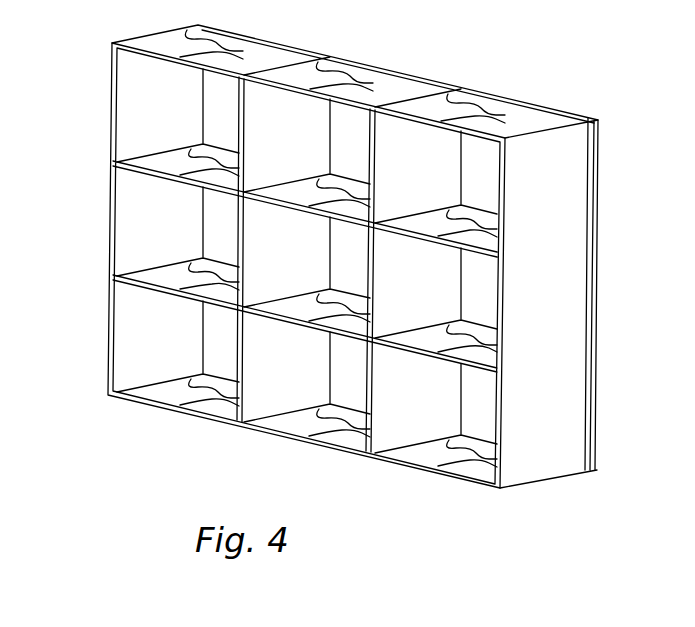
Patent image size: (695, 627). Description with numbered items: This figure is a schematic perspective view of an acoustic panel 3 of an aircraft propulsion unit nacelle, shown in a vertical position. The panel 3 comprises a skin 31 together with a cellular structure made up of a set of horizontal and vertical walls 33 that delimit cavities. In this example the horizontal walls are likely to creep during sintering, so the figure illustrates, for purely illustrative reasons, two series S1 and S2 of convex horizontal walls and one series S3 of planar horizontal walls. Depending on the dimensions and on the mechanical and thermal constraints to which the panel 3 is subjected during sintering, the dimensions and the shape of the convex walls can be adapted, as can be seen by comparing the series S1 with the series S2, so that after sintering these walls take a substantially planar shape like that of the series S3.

The panel 3 is at (342, 271).
The skin 31 is at (602, 133).
The horizontal and vertical walls 33 is at (152, 47).
The series of convex horizontal walls S1 is at (169, 426).
The series of convex horizontal walls S2 is at (292, 461).
The series of planar horizontal walls S3 is at (427, 488).